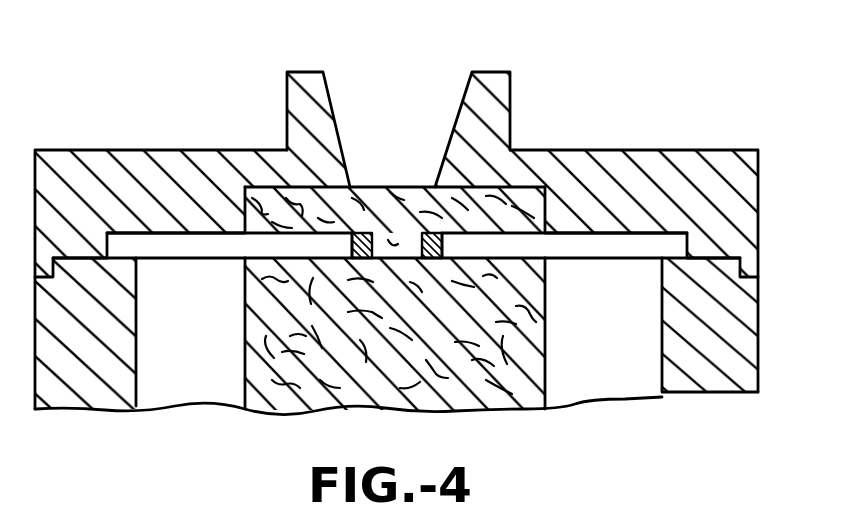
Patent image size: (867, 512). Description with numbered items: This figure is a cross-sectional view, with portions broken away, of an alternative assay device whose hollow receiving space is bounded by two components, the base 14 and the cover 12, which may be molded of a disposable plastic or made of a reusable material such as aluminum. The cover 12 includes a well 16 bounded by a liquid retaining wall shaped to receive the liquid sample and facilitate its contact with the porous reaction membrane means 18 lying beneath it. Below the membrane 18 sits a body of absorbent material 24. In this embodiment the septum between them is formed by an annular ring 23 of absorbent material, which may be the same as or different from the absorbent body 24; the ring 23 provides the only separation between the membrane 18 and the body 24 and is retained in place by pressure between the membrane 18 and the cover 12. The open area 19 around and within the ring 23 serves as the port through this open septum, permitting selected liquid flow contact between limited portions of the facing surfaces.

The cover 12 is at (747, 222).
The base 14 is at (748, 318).
The well 16 is at (428, 92).
The porous reaction membrane means 18 is at (265, 207).
The open area 19 is at (157, 253).
The annular ring 23 is at (433, 243).
The body of absorbent material 24 is at (498, 408).